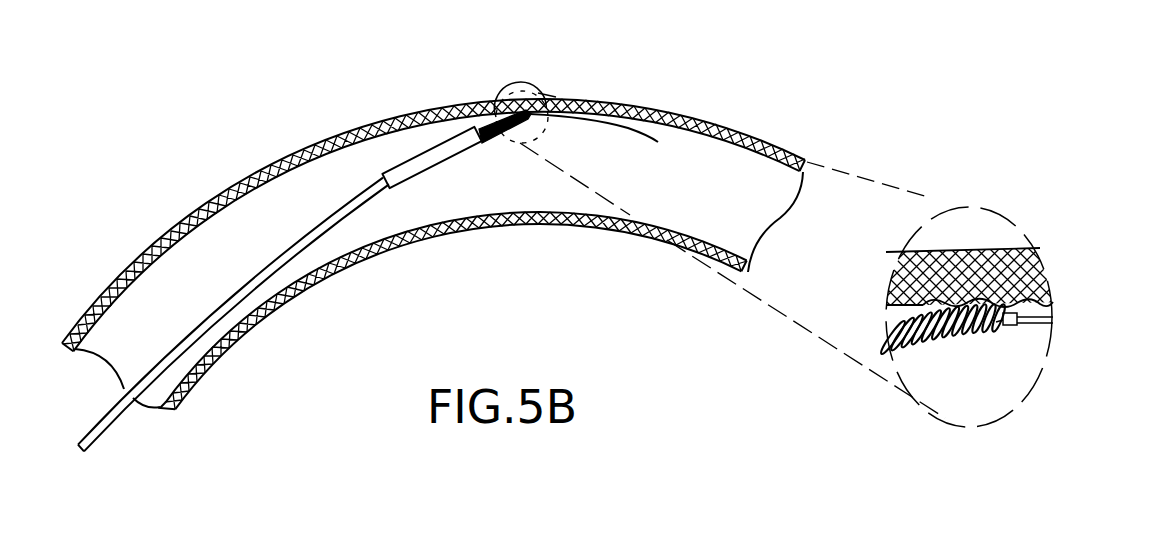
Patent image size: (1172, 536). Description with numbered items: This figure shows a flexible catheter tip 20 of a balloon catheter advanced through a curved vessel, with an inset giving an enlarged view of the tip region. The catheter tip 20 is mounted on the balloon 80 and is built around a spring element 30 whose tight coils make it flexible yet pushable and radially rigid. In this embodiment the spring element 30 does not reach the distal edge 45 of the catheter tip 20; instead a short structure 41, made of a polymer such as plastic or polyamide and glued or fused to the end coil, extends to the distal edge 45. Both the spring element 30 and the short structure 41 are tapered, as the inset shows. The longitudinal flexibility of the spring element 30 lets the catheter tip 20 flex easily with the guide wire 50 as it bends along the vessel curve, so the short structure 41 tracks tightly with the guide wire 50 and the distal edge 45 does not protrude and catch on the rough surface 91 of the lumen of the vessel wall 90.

The catheter tip 20 is at (515, 92).
The spring element 30 is at (514, 120).
The short structure 41 is at (1003, 328).
The distal edge 45 is at (1015, 326).
The guide wire 50 is at (623, 130).
The balloon 80 is at (423, 160).
The vessel wall 90 is at (653, 230).
The rough surface 91 is at (1050, 303).